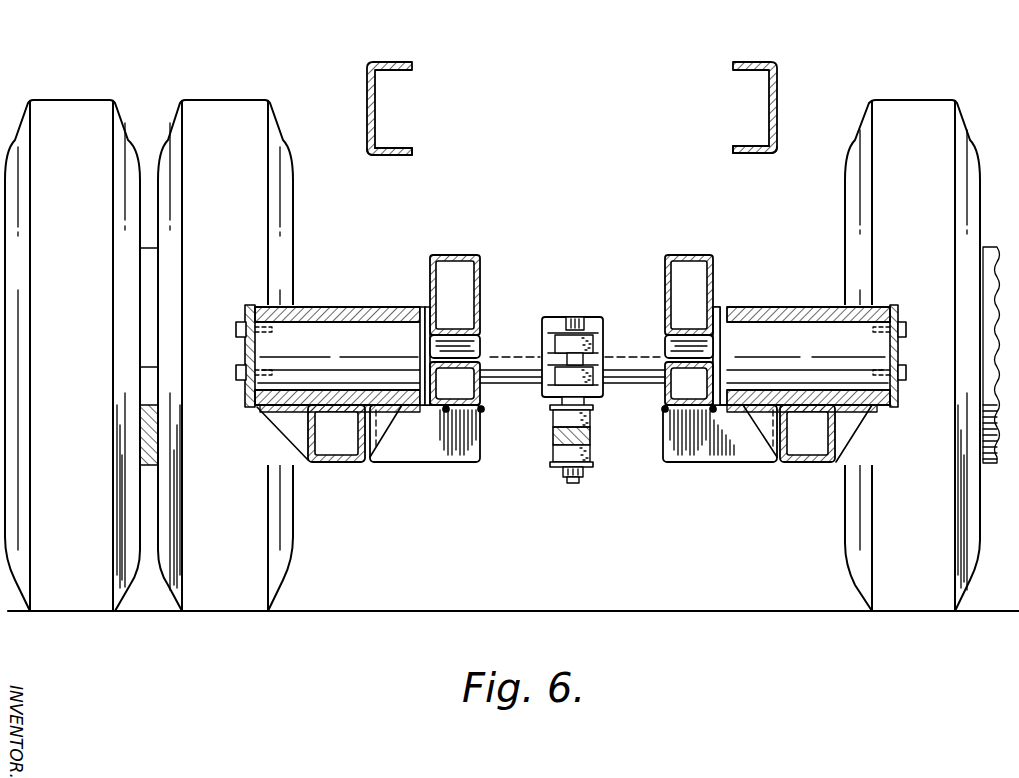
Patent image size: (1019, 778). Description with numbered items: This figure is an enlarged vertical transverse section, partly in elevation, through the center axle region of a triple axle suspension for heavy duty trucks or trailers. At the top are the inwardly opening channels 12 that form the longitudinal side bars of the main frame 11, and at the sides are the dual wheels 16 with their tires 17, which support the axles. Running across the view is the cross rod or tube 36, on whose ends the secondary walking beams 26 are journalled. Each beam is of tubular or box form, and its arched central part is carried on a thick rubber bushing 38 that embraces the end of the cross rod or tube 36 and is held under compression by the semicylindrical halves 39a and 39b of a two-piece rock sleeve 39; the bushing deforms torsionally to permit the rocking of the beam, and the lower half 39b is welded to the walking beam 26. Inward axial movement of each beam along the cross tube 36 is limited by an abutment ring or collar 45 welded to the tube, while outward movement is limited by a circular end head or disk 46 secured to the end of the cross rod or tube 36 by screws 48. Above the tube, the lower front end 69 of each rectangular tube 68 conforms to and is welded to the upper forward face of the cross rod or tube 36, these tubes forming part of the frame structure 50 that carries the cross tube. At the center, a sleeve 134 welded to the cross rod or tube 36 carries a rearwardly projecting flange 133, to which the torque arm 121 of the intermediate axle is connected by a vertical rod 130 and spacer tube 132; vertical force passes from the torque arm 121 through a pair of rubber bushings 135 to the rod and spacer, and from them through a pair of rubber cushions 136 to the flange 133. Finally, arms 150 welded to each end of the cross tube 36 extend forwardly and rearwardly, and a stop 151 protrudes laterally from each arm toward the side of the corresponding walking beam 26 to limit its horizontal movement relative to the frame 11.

The main frame 11 is at (542, 85).
The channel 12 is at (398, 152).
The dual wheel 16 is at (506, 322).
The tire 17 is at (195, 120).
The secondary walking beam 26 is at (352, 462).
The cross rod or tube 36 is at (346, 340).
The rubber bushing 38 is at (372, 323).
The rock sleeve 39 is at (569, 322).
The upper half of rock sleeve 39a is at (283, 306).
The lower half of rock sleeve 39b is at (268, 413).
The abutment ring or collar 45 is at (426, 306).
The circular end head or disk 46 is at (247, 314).
The screw 48 is at (235, 372).
The frame assembly 50 is at (573, 305).
The tube 68 is at (571, 329).
The lower front end of tube 69 is at (458, 338).
The torque arm 121 is at (553, 438).
The vertical rod 130 is at (568, 485).
The spacer tube 132 is at (594, 413).
The flange 133 is at (550, 355).
The sleeve 134 is at (572, 318).
The rubber bushing 135 is at (593, 430).
The rubber cushion 136 is at (594, 340).
The arm 150 is at (484, 405).
The stop 151 is at (422, 462).